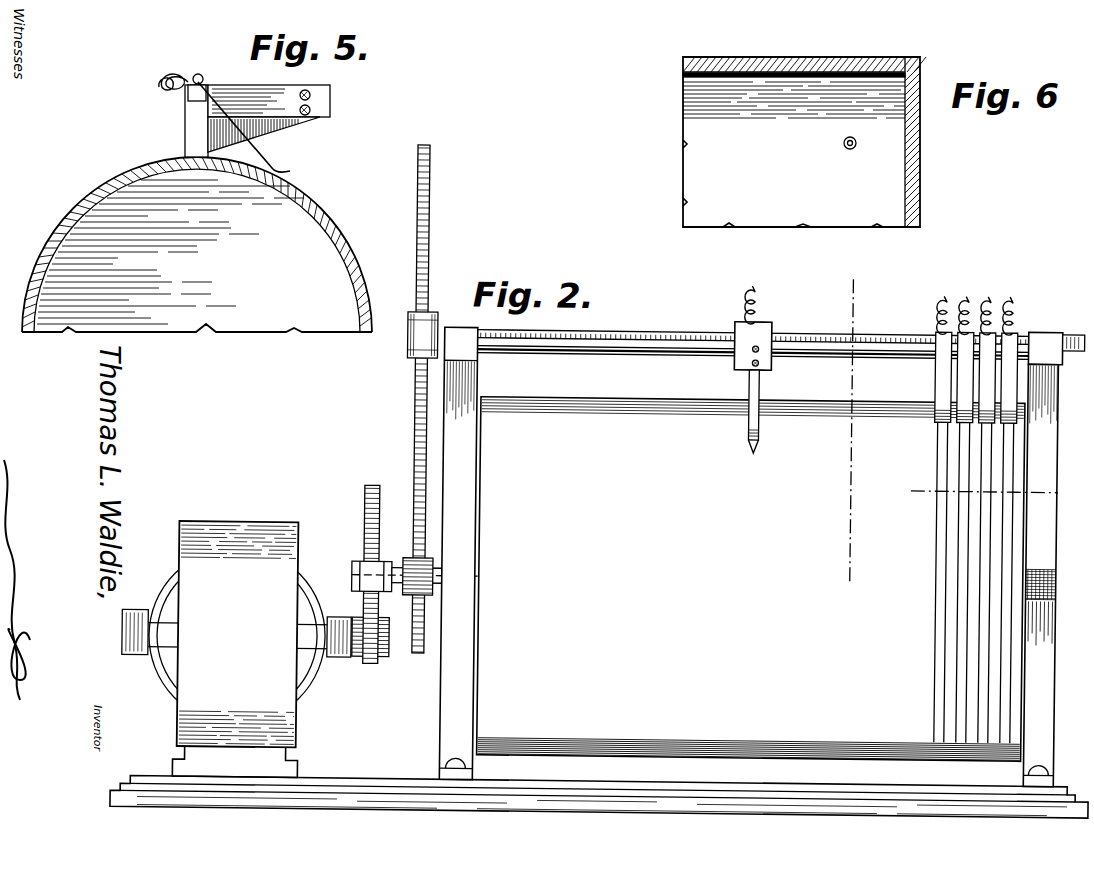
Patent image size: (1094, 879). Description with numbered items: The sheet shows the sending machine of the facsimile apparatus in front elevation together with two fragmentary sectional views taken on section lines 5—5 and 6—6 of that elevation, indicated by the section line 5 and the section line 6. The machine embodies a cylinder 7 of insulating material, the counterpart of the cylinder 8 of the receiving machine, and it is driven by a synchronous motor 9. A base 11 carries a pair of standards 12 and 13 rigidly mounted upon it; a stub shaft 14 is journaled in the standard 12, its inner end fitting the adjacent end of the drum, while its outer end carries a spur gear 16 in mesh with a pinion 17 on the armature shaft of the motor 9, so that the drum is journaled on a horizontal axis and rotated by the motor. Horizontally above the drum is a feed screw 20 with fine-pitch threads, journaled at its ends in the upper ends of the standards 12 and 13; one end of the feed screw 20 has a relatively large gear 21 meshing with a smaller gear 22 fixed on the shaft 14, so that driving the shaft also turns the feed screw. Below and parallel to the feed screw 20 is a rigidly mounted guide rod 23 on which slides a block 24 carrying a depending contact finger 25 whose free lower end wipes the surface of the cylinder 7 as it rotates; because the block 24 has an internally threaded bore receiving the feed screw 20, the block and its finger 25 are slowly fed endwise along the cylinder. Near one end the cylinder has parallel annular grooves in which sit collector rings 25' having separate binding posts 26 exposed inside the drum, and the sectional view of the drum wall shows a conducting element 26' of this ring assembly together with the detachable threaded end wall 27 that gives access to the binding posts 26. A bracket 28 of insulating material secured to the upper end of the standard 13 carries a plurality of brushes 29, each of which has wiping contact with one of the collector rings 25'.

In FIG. 2, the section line 5— 5 is at (840, 301).
In FIG. 2, the section line 6— 6 is at (918, 499).
In FIG. 5, the cylinder 7 is at (30, 266).
In FIG. 6, the cylinder 7 is at (655, 179).
In FIG. 2, the cylinder 7 is at (741, 290).
In FIG. 2, the cylinder 8 is at (742, 391).
In FIG. 2, the synchronous motor 9 is at (238, 649).
In FIG. 2, the base 11 is at (1077, 799).
In FIG. 2, the standard 12 is at (442, 705).
In FIG. 2, the standard 13 is at (1057, 706).
In FIG. 2, the stub shaft 14 is at (393, 566).
In FIG. 2, the spur gear 16 is at (371, 490).
In FIG. 2, the pinion 17 is at (370, 662).
In FIG. 5, the feed screw 20 is at (330, 90).
In FIG. 2, the feed screw 20 is at (676, 324).
In FIG. 2, the gear 21 is at (411, 380).
In FIG. 2, the gear 22 is at (420, 659).
In FIG. 5, the guide rod 23 is at (312, 117).
In FIG. 2, the guide rod 23 is at (650, 358).
In FIG. 2, the block 24 is at (769, 368).
In FIG. 2, the contact finger 25 is at (749, 460).
In FIG. 2, the collector rings 25' is at (751, 579).
In FIG. 6, the binding posts 26 is at (829, 150).
In FIG. 6, the conducting strip 26' is at (817, 56).
In FIG. 6, the end wall 27 is at (921, 176).
In FIG. 5, the bracket 28 is at (201, 77).
In FIG. 5, the brushes 29 is at (278, 158).
In FIG. 2, the brushes 29 is at (934, 374).